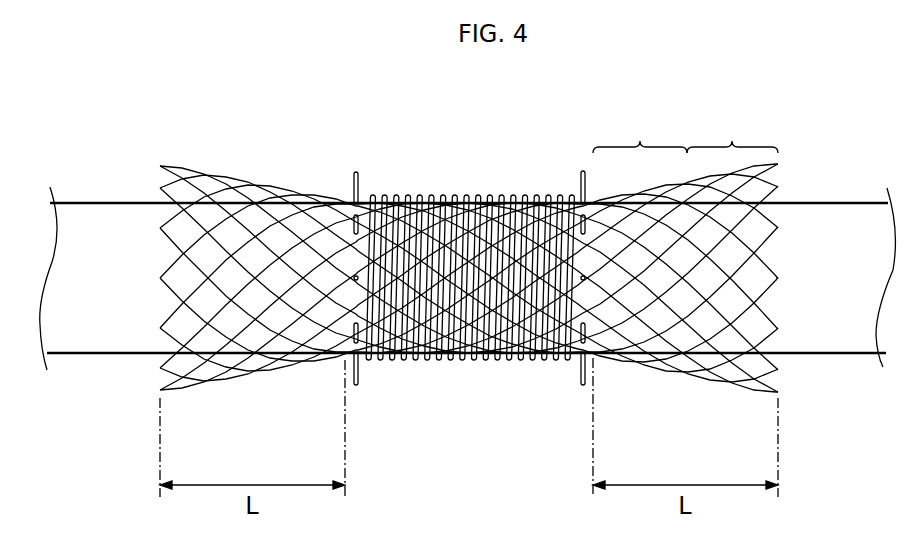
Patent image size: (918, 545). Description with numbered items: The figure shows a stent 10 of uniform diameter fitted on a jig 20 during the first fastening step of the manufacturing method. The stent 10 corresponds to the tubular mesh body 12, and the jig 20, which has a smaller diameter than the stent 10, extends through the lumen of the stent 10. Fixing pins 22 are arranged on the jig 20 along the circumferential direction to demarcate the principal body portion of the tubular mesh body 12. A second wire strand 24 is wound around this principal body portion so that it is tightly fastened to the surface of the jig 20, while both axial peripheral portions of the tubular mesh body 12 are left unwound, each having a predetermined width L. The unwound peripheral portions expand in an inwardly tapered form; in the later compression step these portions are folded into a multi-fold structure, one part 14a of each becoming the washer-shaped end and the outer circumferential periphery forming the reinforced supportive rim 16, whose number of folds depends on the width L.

The stent 10 is at (469, 255).
The tubular mesh body 12 is at (492, 358).
The first end mesh portion 14a is at (640, 253).
The reinforced supportive rim 16 is at (732, 253).
The jig 20 is at (828, 225).
The fixing pin 22 is at (355, 185).
The second wire strand 24 is at (415, 362).